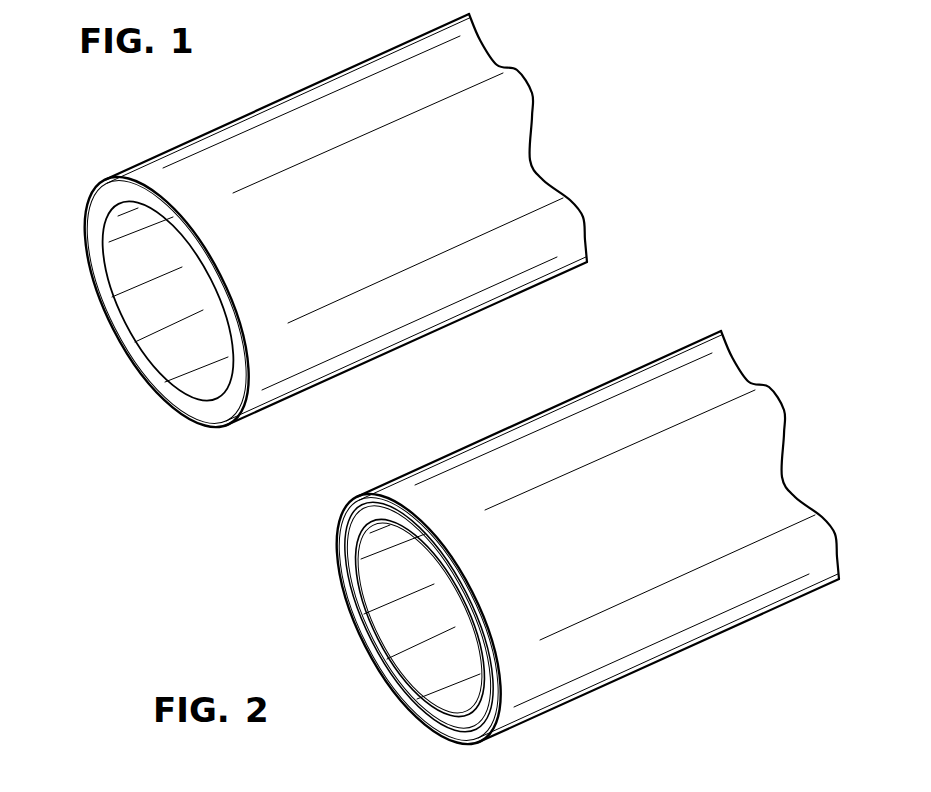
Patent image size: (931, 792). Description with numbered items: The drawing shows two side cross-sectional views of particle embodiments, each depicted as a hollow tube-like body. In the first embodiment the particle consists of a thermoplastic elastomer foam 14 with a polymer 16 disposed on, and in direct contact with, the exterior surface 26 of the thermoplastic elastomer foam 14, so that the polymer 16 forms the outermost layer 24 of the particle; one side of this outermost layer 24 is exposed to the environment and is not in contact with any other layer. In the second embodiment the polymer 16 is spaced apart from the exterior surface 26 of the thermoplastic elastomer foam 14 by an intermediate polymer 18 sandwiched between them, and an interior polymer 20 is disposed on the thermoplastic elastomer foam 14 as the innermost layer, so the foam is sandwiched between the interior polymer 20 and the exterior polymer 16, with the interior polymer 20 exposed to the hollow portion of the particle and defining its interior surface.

In FIG. 1, the thermoplastic elastomer foam 14 is at (95, 255).
In FIG. 2, the thermoplastic elastomer foam 14 is at (352, 530).
In FIG. 1, the polymer 16 is at (82, 203).
In FIG. 2, the polymer 16 is at (358, 493).
In FIG. 2, the intermediate polymer 18 is at (350, 498).
In FIG. 2, the interior polymer 20 is at (355, 543).
In FIG. 1, the outermost layer 24 is at (292, 132).
In FIG. 2, the outermost layer 24 is at (582, 442).
In FIG. 1, the exterior surface 26 is at (108, 180).
In FIG. 2, the exterior surface 26 is at (378, 502).